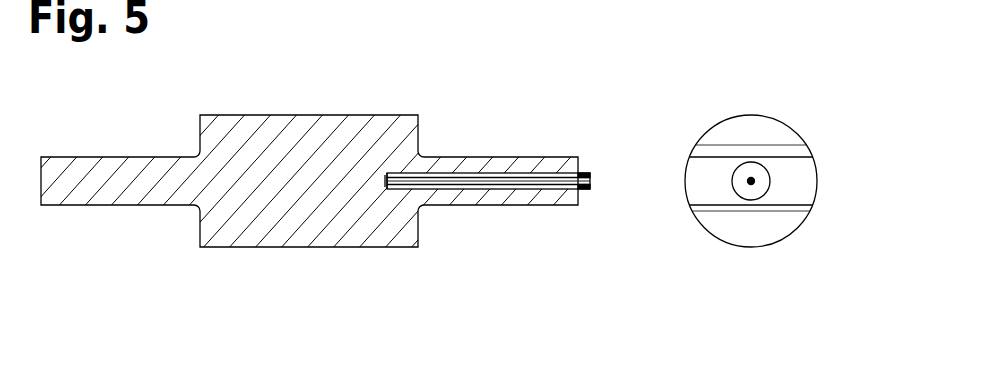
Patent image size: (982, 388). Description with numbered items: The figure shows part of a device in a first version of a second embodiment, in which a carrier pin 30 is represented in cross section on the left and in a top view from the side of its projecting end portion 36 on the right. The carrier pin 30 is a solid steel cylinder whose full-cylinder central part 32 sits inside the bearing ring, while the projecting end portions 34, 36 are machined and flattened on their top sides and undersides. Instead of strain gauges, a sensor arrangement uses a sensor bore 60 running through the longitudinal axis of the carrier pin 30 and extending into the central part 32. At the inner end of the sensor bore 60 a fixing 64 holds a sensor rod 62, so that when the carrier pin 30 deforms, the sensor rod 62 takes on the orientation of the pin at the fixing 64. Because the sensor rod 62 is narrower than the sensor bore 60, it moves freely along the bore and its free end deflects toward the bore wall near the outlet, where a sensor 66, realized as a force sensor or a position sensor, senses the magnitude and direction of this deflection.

The carrier pin 30 is at (318, 88).
The central part 32 is at (245, 128).
The end portion 34 is at (88, 170).
The end portion 36 is at (462, 164).
The sensor bore 60 is at (512, 175).
The sensor rod 62 is at (553, 180).
The fixing 64 is at (387, 184).
The sensor 66 is at (581, 197).